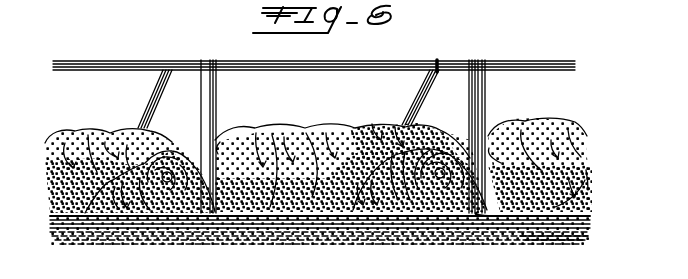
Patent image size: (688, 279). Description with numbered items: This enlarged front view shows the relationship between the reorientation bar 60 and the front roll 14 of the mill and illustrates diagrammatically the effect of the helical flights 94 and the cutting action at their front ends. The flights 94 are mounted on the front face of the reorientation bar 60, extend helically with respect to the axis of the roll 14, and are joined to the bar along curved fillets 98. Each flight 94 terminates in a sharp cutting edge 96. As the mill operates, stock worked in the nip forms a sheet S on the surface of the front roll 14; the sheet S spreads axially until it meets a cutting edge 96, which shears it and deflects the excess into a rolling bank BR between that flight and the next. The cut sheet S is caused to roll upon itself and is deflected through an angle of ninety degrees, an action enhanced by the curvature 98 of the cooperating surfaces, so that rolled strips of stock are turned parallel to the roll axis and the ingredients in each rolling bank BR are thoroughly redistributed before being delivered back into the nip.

The front roll 14 is at (602, 231).
The reorientation bar 60 is at (548, 77).
The flights 94 is at (211, 62).
The fillets 98 is at (439, 62).
The cutting edges 96 is at (485, 216).
The sheet S is at (553, 234).
The rolling bank BR is at (352, 130).